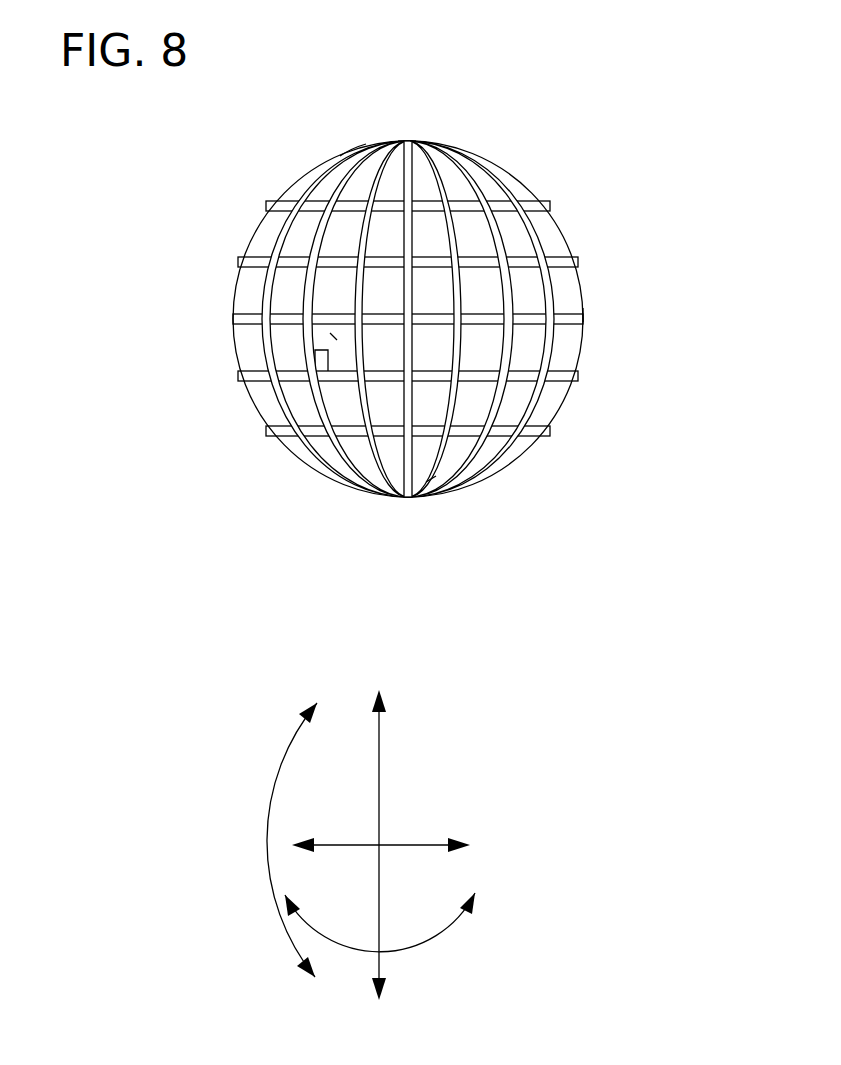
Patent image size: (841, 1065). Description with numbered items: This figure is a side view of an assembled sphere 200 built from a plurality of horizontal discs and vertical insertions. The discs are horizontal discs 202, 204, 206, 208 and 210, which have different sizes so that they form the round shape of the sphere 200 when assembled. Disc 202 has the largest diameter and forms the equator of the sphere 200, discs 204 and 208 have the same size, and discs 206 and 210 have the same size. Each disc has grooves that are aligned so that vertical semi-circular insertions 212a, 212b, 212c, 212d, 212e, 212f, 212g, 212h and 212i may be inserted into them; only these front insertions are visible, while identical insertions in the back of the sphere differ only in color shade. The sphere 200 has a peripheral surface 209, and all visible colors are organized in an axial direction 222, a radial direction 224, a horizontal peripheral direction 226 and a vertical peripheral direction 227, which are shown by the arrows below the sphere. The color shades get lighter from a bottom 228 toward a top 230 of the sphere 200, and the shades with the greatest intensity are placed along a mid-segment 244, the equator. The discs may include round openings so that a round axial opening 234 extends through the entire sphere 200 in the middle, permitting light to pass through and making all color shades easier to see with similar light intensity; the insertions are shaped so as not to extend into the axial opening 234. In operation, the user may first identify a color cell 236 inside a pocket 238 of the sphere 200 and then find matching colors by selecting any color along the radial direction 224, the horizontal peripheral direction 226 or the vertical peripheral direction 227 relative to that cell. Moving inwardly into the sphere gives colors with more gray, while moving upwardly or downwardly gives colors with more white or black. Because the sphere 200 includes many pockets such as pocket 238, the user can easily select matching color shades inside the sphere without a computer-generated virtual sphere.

The sphere 200 is at (542, 134).
The horizontal disc 202 is at (235, 318).
The horizontal disc 204 is at (240, 262).
The horizontal disc 206 is at (266, 205).
The horizontal disc 208 is at (240, 376).
The peripheral surface 209 is at (352, 152).
The horizontal disc 210 is at (267, 432).
The vertical semi-circular insertion 212a is at (408, 462).
The vertical semi-circular insertion 212b is at (375, 491).
The vertical semi-circular insertion 212c is at (338, 478).
The vertical semi-circular insertion 212d is at (320, 460).
The vertical semi-circular insertion 212e is at (290, 448).
The vertical semi-circular insertion 212f is at (436, 472).
The vertical semi-circular insertion 212g is at (480, 468).
The vertical semi-circular insertion 212h is at (508, 456).
The vertical semi-circular insertion 212i is at (566, 398).
The axial direction 222 is at (381, 748).
The radial direction 224 is at (418, 843).
The horizontal peripheral direction 226 is at (425, 942).
The vertical peripheral direction 227 is at (278, 764).
The bottom 228 is at (433, 478).
The top 230 is at (410, 140).
The axial opening 234 is at (400, 140).
The color cell 236 is at (318, 361).
The pocket 238 is at (337, 338).
The mid-segment 244 is at (583, 315).